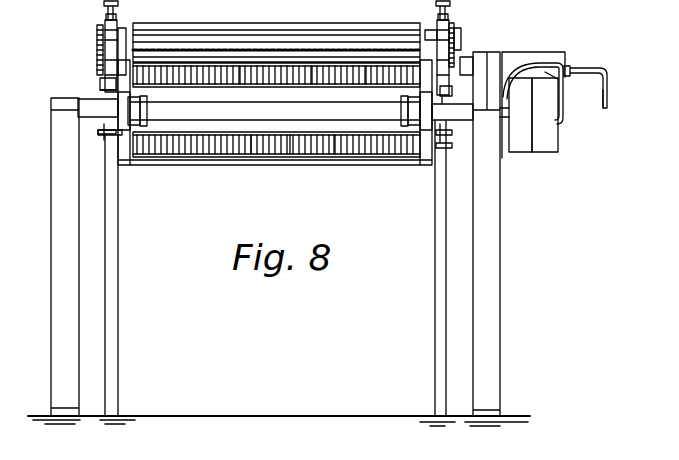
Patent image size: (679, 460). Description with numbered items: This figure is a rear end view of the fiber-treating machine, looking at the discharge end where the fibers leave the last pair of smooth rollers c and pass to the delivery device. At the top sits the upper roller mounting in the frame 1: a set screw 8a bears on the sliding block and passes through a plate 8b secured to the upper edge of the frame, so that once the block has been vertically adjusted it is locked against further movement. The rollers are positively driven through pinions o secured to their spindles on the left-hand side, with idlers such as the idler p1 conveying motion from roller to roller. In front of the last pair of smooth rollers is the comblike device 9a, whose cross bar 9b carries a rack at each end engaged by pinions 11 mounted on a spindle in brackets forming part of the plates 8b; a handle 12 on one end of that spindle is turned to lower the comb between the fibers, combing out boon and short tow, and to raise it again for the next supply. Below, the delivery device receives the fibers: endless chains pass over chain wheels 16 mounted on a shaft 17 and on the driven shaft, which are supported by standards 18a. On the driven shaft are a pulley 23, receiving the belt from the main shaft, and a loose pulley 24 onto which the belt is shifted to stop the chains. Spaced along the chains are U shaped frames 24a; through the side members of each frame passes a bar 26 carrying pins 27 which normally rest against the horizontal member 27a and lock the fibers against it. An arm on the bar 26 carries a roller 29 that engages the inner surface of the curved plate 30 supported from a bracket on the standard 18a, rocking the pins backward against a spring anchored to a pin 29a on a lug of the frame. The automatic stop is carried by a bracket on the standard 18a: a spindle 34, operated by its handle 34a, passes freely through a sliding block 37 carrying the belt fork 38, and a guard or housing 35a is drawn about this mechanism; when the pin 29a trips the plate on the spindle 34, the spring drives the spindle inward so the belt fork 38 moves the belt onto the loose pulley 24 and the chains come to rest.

The frame 1 is at (436, 262).
The set screw 8a is at (118, 24).
The plate 8b is at (104, 23).
The comblike device 9a is at (296, 44).
The cross bar 9b is at (240, 47).
The pinions 11 is at (180, 25).
The handle 12 is at (461, 58).
The chain wheel 16 is at (400, 120).
The shaft 17 is at (275, 111).
The standard 18a is at (274, 234).
The pulley 23 is at (520, 115).
The loose pulley 24 is at (545, 115).
The U shaped frame 24a is at (150, 87).
The bar 26 is at (308, 86).
The pins 27 is at (368, 84).
The horizontal member 27a is at (238, 84).
The roller 29 is at (80, 90).
The pin 29a is at (103, 76).
The curved plate 30 is at (62, 100).
The spindle 34 is at (594, 68).
The handle 34a is at (608, 92).
The housing 35a is at (546, 56).
The sliding block 37 is at (556, 78).
The belt fork 38 is at (560, 122).
The smooth rollers C is at (346, 27).
The pinions o is at (455, 26).
The rack p1 is at (96, 38).